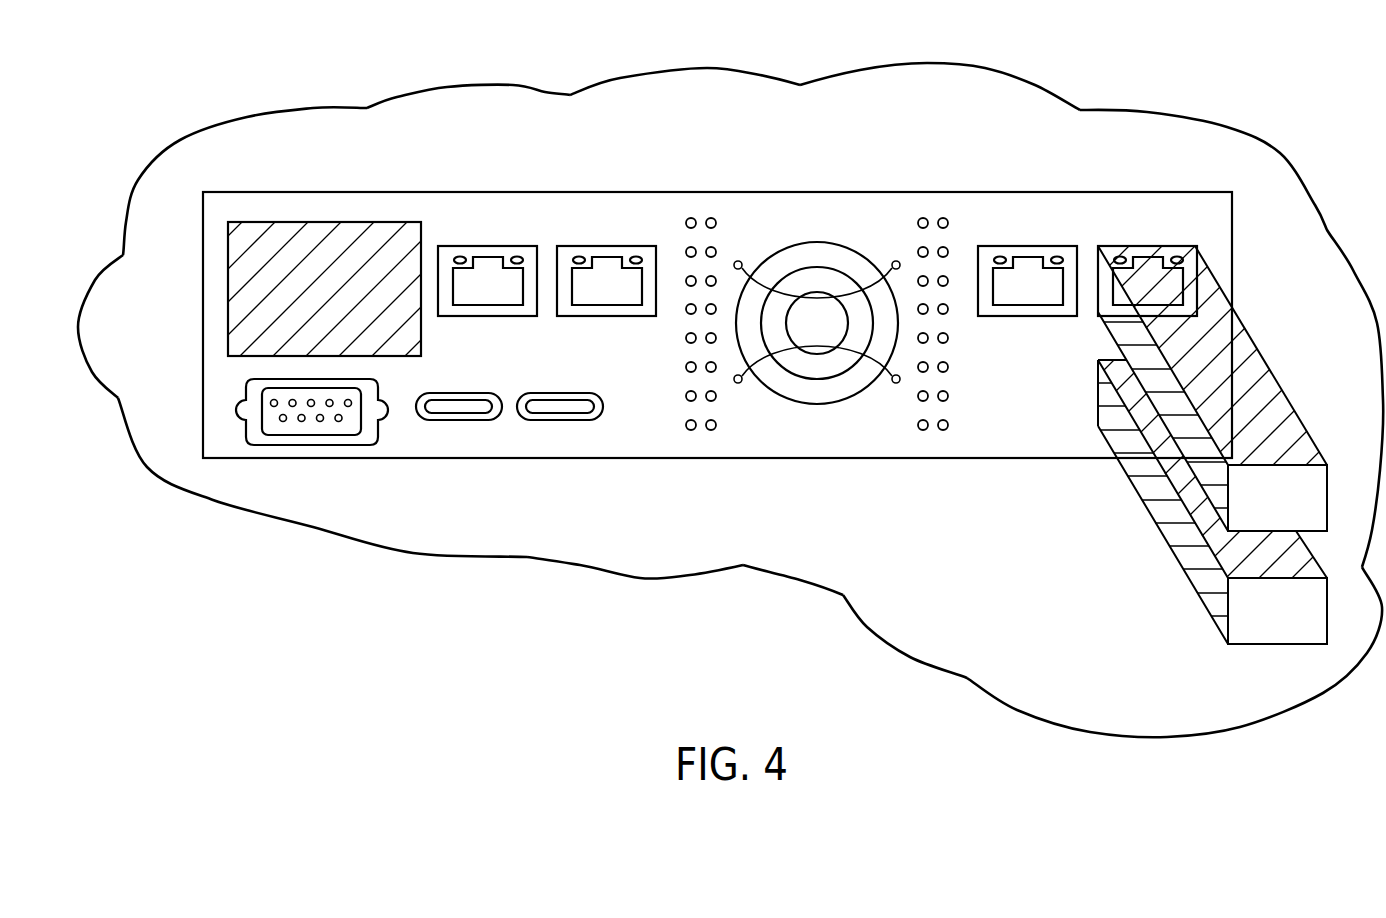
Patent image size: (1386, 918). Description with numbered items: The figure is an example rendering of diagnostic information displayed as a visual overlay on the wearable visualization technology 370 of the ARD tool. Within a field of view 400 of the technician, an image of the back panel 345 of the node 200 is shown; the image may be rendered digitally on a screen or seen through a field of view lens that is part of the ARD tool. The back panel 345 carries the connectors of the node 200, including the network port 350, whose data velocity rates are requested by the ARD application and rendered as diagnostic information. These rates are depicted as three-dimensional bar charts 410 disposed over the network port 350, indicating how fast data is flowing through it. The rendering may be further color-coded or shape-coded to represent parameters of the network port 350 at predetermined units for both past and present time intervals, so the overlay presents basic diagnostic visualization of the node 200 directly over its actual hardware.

The field of view 400 is at (1234, 125).
The node 200 is at (203, 318).
The back panel 345 is at (798, 212).
The network port 350 is at (1108, 237).
The 3-dimensional bar charts 410 is at (1276, 380).
The wearable visualization technology 370 is at (812, 546).